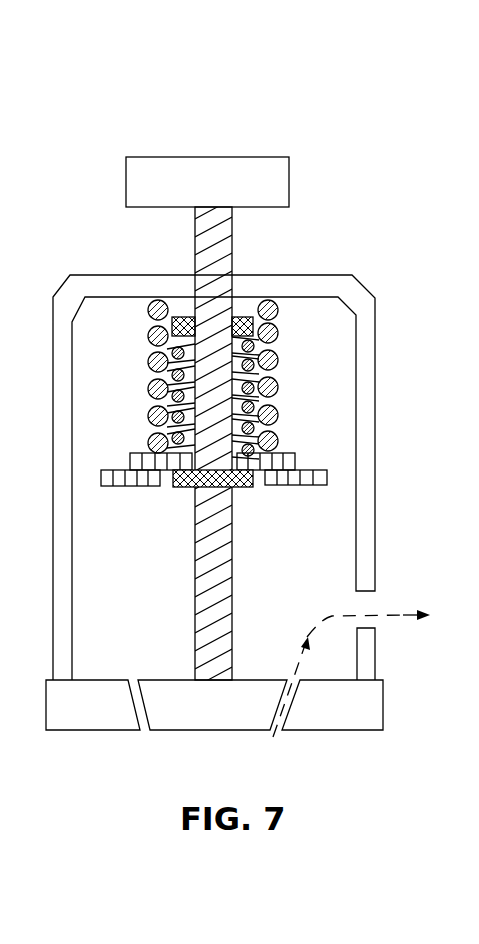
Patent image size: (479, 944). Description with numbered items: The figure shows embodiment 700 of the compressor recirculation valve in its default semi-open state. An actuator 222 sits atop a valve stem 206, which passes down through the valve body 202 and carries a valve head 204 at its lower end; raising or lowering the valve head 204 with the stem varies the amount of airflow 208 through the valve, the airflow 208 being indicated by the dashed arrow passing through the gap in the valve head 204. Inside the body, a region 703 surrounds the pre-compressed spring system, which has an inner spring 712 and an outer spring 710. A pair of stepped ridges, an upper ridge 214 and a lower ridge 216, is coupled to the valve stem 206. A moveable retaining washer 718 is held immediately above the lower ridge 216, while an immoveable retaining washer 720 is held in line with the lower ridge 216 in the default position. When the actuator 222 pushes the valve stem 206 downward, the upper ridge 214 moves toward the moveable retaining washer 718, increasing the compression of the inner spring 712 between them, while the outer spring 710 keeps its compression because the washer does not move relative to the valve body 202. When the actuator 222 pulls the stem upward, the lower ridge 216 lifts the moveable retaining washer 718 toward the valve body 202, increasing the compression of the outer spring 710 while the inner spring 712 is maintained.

The embodiment 700 is at (236, 126).
The actuator 222 is at (207, 182).
The valve body 202 is at (323, 275).
The interior chamber 703 is at (312, 355).
The upper ridge 214 is at (193, 322).
The inner spring 712 is at (252, 389).
The outer spring 710 is at (272, 418).
The moveable retaining washer 718 is at (147, 453).
The immoveable retaining washer 720 is at (296, 486).
The lower ridge 216 is at (190, 488).
The valve stem 206 is at (233, 572).
The valve head 204 is at (175, 678).
The airflow 208 is at (382, 615).